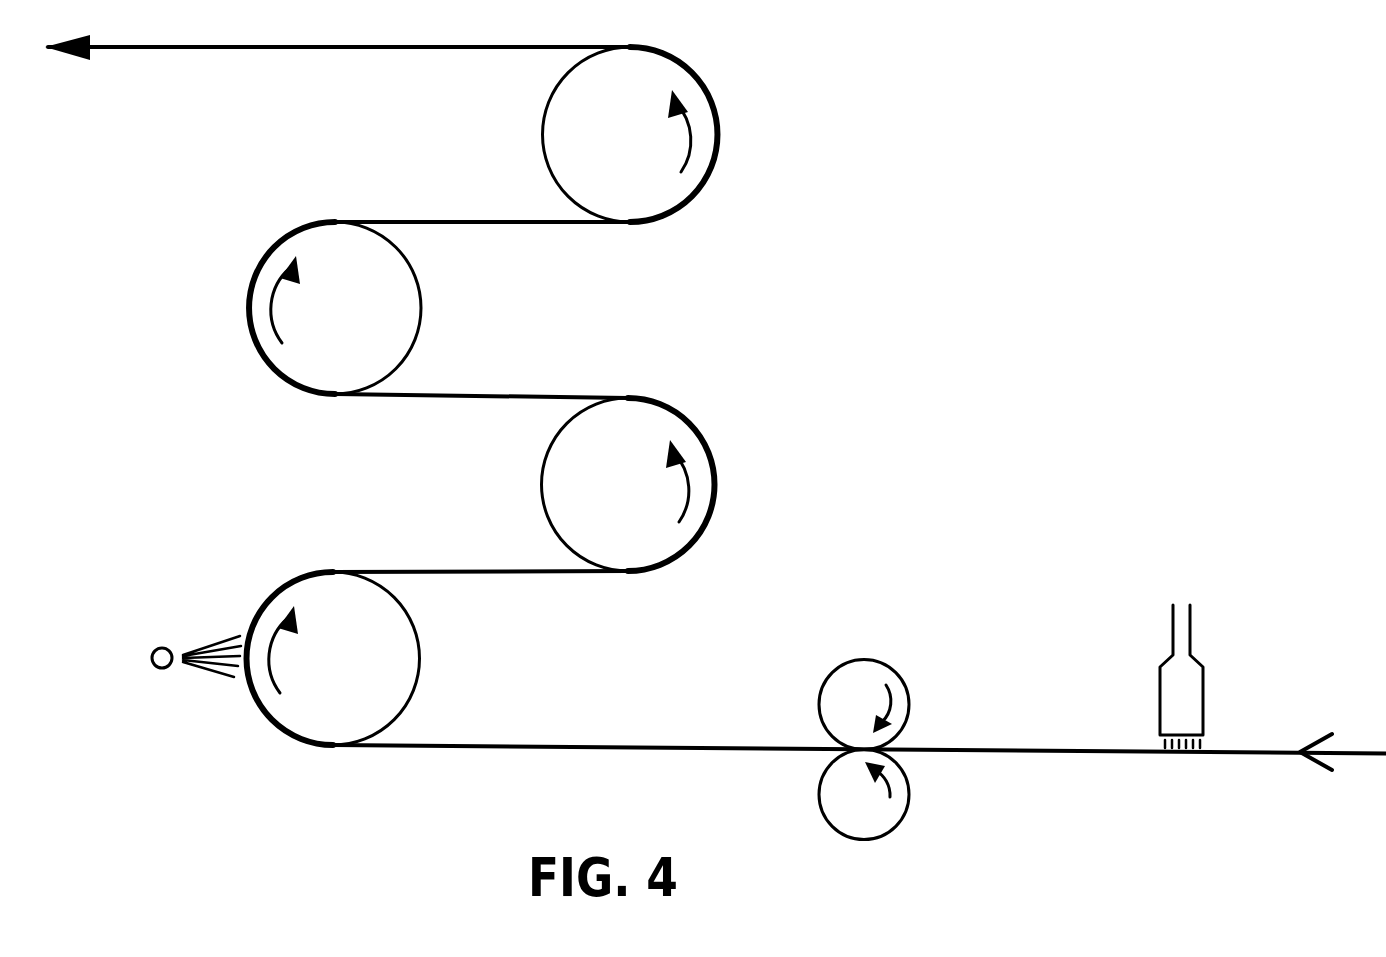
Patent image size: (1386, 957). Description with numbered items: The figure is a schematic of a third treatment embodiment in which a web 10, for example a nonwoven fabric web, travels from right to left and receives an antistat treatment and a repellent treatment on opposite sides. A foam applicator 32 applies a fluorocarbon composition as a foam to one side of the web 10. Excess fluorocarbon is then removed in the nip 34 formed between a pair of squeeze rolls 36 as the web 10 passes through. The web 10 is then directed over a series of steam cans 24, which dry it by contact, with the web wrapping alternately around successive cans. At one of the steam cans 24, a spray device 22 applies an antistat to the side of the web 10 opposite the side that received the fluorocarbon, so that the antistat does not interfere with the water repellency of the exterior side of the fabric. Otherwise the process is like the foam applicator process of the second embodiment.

The web 10 is at (158, 48).
The spray device 22 is at (157, 648).
The steam cans 24 is at (574, 134).
The foam applicator 32 is at (1160, 695).
The nip 34 is at (908, 730).
The squeeze rolls 36 is at (850, 684).